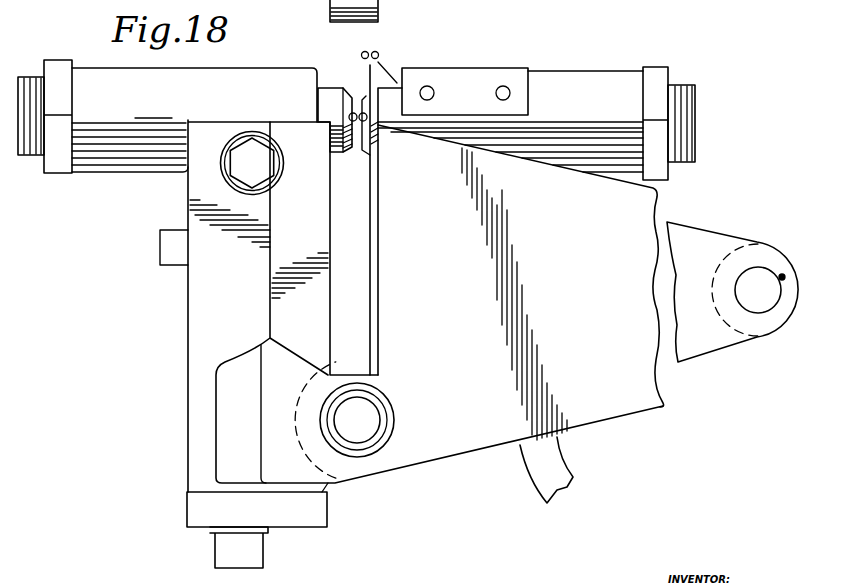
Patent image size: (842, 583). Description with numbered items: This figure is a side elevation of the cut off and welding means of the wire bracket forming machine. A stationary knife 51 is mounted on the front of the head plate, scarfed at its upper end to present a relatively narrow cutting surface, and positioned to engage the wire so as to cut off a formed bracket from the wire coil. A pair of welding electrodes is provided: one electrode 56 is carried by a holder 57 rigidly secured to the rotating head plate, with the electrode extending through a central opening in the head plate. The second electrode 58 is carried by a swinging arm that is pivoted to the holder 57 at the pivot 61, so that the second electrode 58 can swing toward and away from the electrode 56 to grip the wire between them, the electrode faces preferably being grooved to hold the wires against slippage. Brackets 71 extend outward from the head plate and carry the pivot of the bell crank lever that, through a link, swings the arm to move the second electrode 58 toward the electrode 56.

The stationary knife 51 is at (377, 73).
The welding electrode 56 is at (328, 92).
The holder 57 is at (203, 298).
The second electrode 58 is at (390, 98).
The pivot 61 is at (362, 420).
The brackets 71 is at (607, 410).